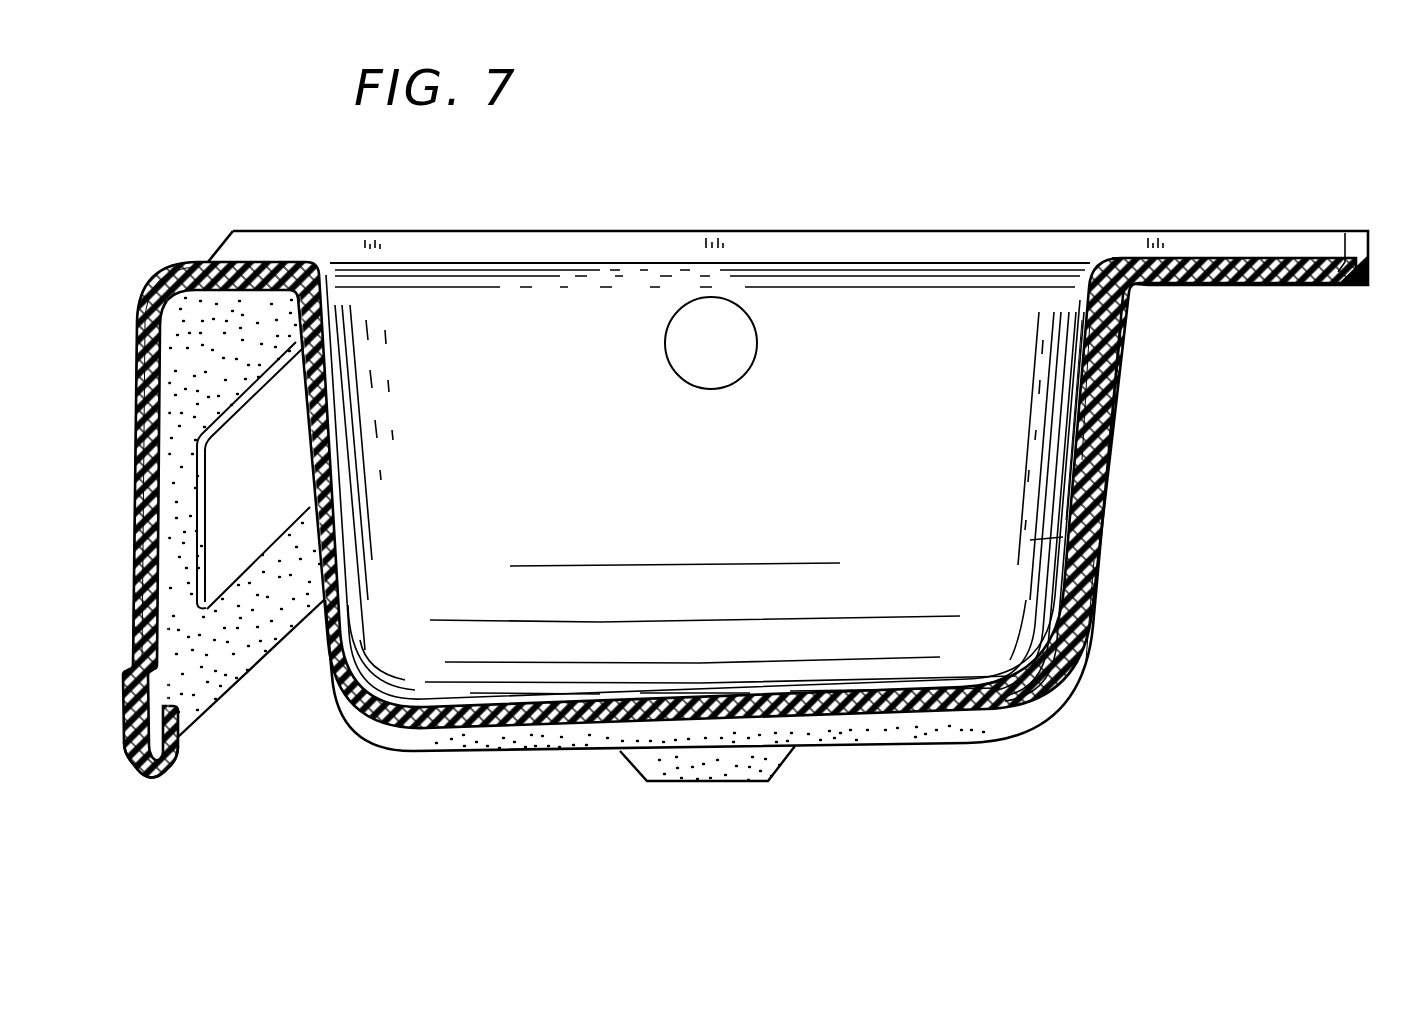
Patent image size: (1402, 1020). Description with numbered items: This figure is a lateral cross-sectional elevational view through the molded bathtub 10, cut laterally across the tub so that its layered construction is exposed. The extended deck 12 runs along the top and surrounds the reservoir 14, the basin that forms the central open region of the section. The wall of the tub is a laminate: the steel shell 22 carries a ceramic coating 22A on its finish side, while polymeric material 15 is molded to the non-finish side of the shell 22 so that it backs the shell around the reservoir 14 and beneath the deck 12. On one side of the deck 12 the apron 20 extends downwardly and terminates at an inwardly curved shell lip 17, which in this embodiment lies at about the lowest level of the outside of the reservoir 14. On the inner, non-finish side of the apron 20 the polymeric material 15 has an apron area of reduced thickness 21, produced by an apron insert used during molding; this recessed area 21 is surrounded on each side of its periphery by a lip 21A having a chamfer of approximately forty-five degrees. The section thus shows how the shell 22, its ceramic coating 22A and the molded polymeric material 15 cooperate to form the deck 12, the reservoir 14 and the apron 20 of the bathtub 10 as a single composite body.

The molded bathtub 10 is at (271, 229).
The extended deck 12 is at (1245, 248).
The reservoir 14 is at (1105, 535).
The polymeric material 15 is at (1100, 460).
The shell lip 17 is at (178, 748).
The apron 20 is at (138, 405).
The apron area of reduced thickness 21 is at (222, 524).
The lip 21A is at (200, 490).
The steel shell 22 is at (1100, 390).
The ceramic coating 22A is at (1082, 620).